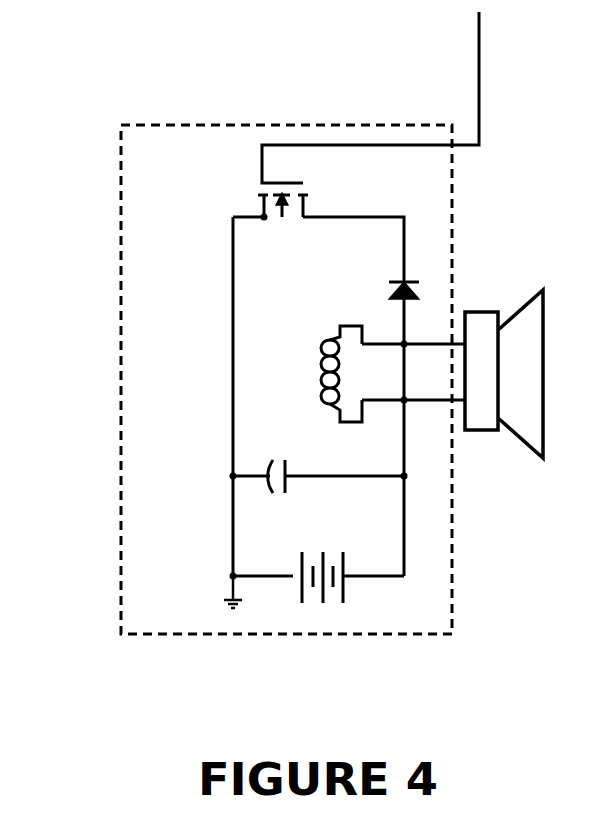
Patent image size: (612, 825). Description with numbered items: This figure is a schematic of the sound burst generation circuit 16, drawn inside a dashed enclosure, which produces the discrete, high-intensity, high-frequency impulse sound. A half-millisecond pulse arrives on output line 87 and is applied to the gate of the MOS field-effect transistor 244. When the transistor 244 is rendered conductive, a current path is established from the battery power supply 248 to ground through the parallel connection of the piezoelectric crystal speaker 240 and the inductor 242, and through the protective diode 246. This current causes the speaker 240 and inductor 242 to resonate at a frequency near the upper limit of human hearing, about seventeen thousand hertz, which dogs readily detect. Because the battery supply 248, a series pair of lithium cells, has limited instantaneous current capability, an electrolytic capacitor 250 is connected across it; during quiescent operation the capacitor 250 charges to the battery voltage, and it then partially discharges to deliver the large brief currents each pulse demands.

The sound burst generation circuit 16 is at (121, 343).
The output line 87 is at (479, 48).
The piezoelectric crystal speaker 240 is at (519, 436).
The inductor 242 is at (325, 356).
The MOS field-effect transistor 244 is at (258, 196).
The diode 246 is at (418, 285).
The battery power supply 248 is at (343, 590).
The electrolytic capacitor 250 is at (282, 455).